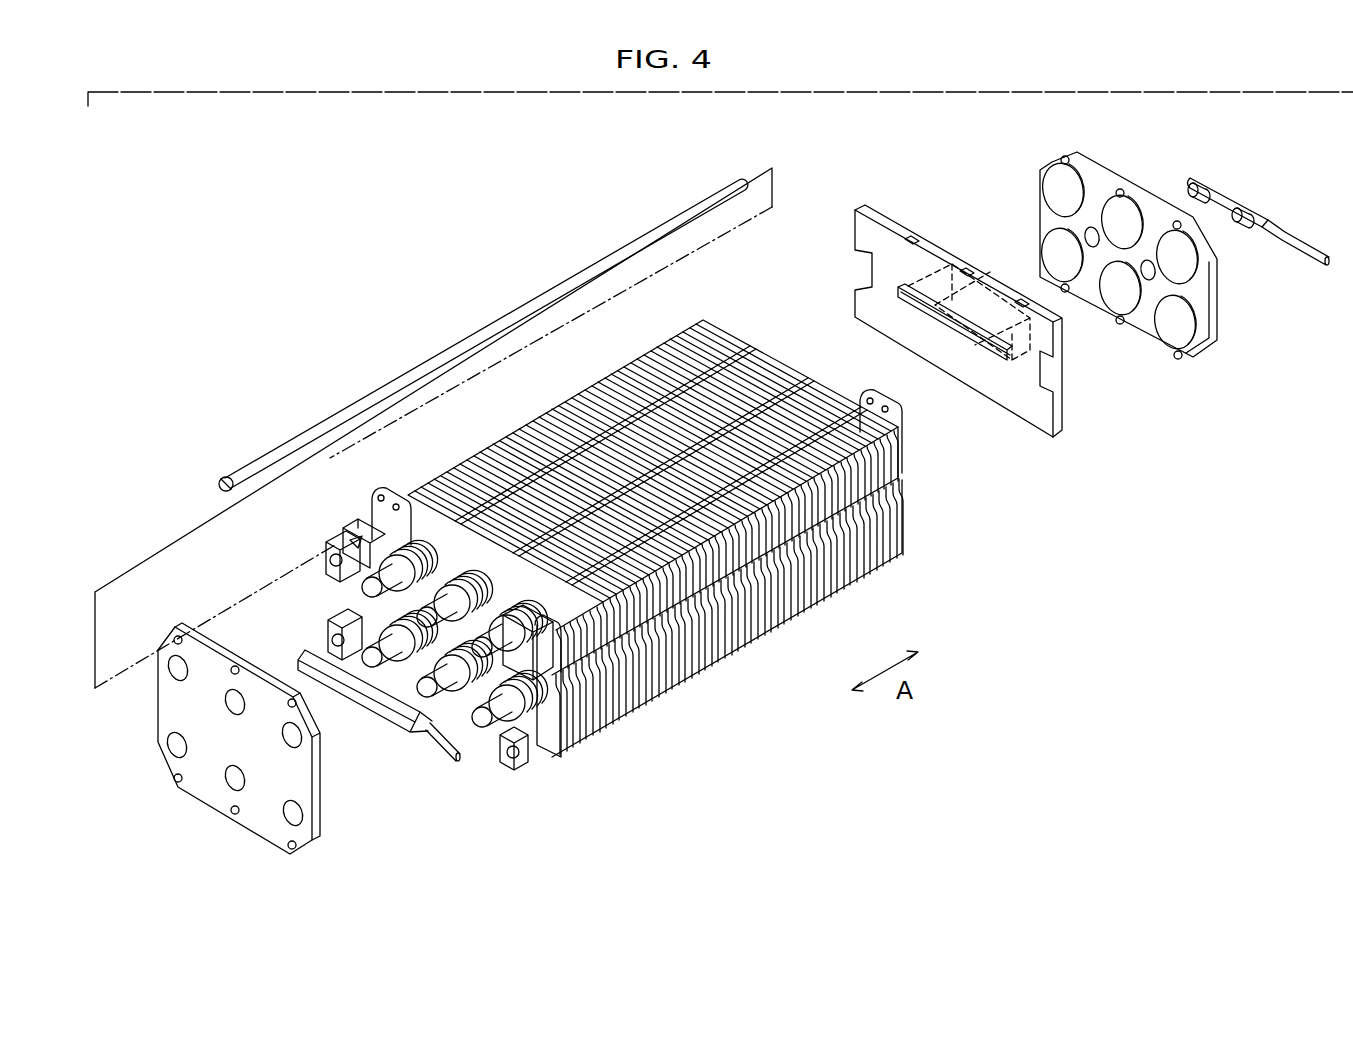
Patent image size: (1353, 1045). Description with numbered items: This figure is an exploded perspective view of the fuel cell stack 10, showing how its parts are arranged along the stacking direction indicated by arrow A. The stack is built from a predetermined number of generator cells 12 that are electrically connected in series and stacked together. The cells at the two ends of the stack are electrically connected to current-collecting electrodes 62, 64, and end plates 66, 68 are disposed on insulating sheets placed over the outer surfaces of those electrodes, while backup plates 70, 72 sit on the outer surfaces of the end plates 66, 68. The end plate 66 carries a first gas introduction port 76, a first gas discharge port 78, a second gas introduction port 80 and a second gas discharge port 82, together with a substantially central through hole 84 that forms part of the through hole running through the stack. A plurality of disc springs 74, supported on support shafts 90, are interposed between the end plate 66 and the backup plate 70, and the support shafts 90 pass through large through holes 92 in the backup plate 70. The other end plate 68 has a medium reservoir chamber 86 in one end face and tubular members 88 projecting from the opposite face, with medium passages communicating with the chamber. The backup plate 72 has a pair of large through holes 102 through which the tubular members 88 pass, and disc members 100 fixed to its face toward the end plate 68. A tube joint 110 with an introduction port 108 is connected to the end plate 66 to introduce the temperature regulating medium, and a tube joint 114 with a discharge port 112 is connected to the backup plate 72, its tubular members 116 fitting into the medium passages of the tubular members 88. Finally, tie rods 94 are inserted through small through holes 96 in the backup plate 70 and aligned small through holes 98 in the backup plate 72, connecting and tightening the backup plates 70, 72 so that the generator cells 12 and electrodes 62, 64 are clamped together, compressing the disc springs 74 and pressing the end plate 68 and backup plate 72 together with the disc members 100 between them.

The fuel cell stack 10 is at (282, 299).
The generator cells 12 is at (551, 419).
The current-collecting electrode 62 is at (392, 490).
The current-collecting electrode 64 is at (888, 397).
The end plate 66 is at (365, 514).
The end plate 68 is at (950, 337).
The backup plate 70 is at (242, 713).
The backup plate 72 is at (1113, 250).
The disc springs 74 is at (378, 575).
The first gas introduction port 76 is at (326, 555).
The first gas discharge port 78 is at (515, 772).
The second gas introduction port 80 is at (548, 750).
The second gas discharge port 82 is at (328, 640).
The through hole 84 is at (452, 692).
The medium reservoir chamber 86 is at (895, 315).
The tubular members 88 is at (954, 262).
The support shafts 90 is at (372, 660).
The large through holes 92 is at (176, 752).
The tie rods 94 is at (286, 450).
The small through holes 96 is at (178, 635).
The small through holes 98 is at (1062, 156).
The disc members 100 is at (1048, 190).
The large through holes 102 is at (1085, 240).
The introduction port 108 is at (464, 768).
The tube joint 110 is at (378, 708).
The discharge port 112 is at (1259, 223).
The tube joint 114 is at (1228, 198).
The tubular members 116 is at (1198, 182).